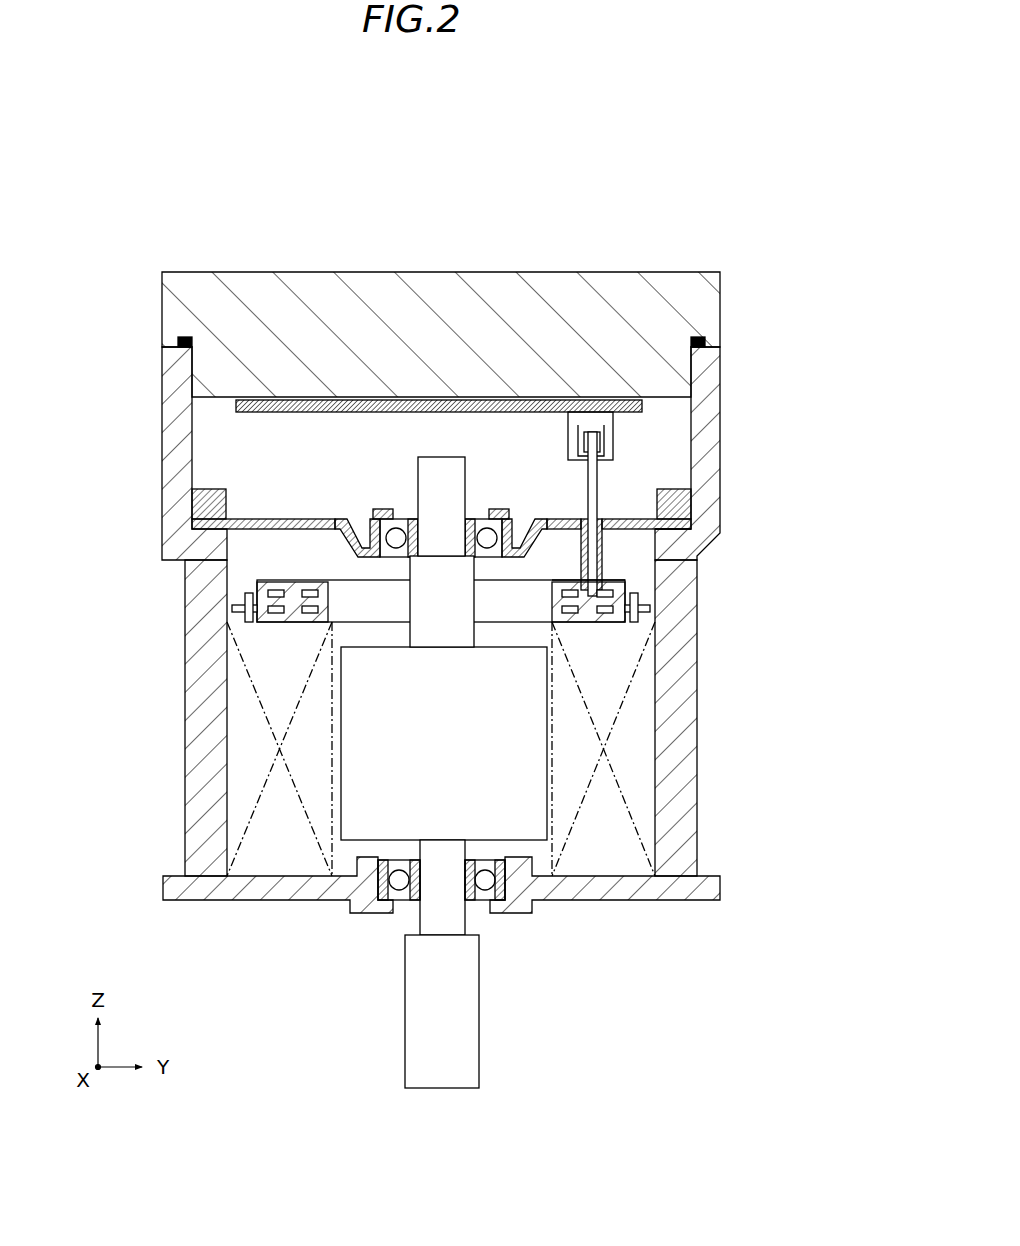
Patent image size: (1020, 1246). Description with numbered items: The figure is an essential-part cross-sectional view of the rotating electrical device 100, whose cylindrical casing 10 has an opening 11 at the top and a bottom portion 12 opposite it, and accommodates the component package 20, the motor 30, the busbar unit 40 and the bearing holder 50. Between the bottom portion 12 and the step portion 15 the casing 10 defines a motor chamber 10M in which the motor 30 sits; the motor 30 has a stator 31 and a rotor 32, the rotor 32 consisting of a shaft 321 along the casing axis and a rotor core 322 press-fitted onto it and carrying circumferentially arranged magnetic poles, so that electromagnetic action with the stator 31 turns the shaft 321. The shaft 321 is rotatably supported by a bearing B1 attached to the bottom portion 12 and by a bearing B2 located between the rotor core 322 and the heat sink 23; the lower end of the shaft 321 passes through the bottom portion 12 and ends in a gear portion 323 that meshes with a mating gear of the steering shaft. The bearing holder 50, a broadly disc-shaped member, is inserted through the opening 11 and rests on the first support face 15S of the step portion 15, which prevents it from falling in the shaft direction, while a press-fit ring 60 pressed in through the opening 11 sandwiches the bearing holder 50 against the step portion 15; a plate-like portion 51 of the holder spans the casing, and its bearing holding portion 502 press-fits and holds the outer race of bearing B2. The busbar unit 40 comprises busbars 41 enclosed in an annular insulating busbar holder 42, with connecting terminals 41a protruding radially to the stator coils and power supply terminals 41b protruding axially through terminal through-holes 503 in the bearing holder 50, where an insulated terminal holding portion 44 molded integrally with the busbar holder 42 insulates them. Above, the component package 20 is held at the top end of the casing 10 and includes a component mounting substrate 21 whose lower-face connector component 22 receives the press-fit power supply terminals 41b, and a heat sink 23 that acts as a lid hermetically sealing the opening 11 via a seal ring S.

The rotating electrical device 100 is at (661, 138).
The component package 20 is at (327, 216).
The component mounting substrate 21 is at (320, 409).
The connector component 22 is at (568, 438).
The heat sink 23 is at (440, 272).
The opening 11 is at (703, 290).
The seal ring S is at (706, 341).
The step portion 15 is at (702, 558).
The first support face 15S is at (692, 524).
The casing 10 is at (697, 690).
The bottom portion 12 is at (615, 905).
The press-fit ring 60 is at (202, 490).
The support plate 51 is at (265, 519).
The bearing holder 50 is at (323, 512).
The bearing holding portion 502 is at (490, 508).
The terminal through-hole 503 is at (580, 522).
The bearing B2 is at (390, 508).
The bearing B1 is at (405, 912).
The power supply terminal 41b is at (598, 478).
The busbar unit 40 is at (112, 553).
The busbar holder 42 is at (257, 583).
The busbar 41 is at (257, 600).
The connecting terminal 41a is at (240, 608).
The insulated terminal holding portion 44 is at (614, 557).
The motor 30 is at (75, 792).
The stator 31 is at (268, 776).
The rotor 32 is at (118, 643).
The shaft 321 is at (430, 630).
The rotor core 322 is at (360, 707).
The gear portion 323 is at (479, 1028).
The motor chamber 10M is at (474, 552).